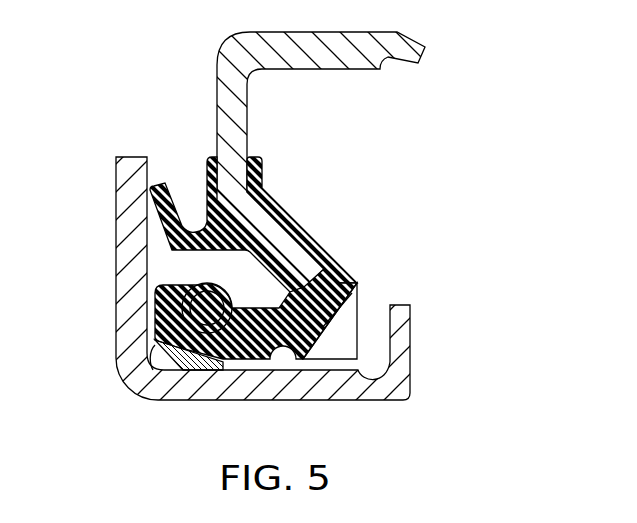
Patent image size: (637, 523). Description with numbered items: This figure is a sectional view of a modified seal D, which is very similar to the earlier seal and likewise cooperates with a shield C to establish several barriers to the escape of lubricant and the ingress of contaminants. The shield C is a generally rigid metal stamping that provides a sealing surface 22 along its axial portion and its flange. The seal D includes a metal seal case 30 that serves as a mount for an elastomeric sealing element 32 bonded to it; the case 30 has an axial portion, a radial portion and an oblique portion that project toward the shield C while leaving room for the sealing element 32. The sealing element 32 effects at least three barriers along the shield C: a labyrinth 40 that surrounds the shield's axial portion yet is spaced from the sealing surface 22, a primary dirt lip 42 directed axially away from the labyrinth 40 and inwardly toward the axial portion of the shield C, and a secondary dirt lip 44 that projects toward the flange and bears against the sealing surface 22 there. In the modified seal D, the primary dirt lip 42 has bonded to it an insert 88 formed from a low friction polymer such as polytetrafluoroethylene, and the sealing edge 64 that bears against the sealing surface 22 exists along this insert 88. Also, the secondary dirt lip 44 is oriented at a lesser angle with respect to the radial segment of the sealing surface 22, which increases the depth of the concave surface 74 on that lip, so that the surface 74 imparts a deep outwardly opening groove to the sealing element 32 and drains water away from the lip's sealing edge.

The sealing surface 22 is at (150, 272).
The seal case 30 is at (301, 58).
The sealing element 32 is at (357, 287).
The labyrinth 40 is at (324, 322).
The primary dirt lip 42 is at (170, 358).
The secondary dirt lip 44 is at (183, 208).
The sealing edge 64 is at (214, 357).
The concave outwardly presented surface 74 is at (182, 198).
The insert 88 is at (214, 359).
The shield C is at (236, 332).
The modified seal D is at (320, 229).